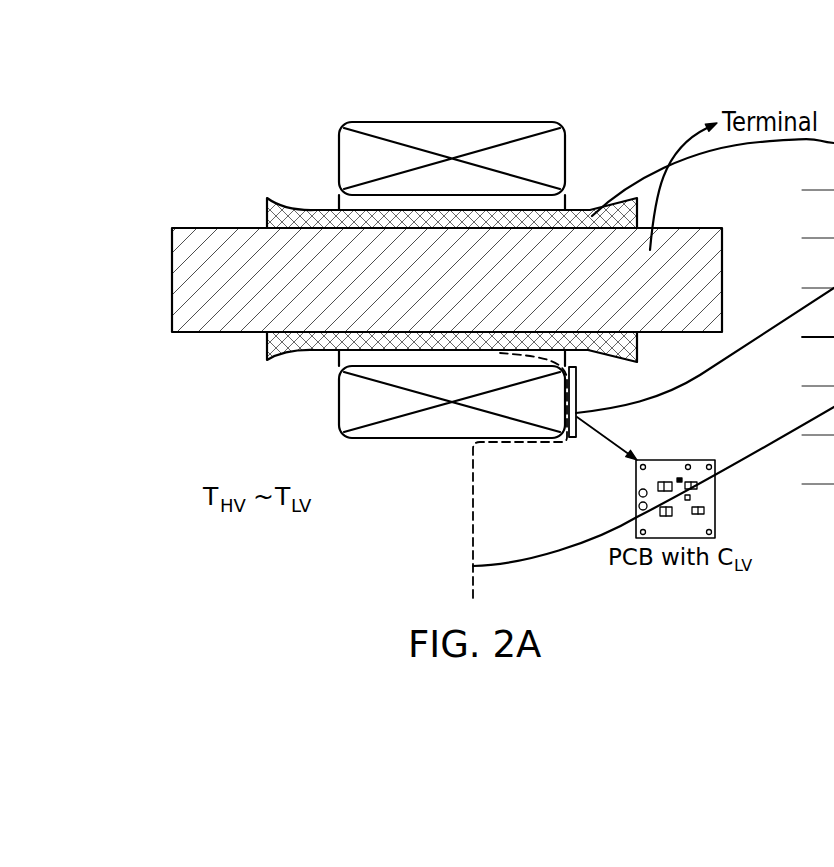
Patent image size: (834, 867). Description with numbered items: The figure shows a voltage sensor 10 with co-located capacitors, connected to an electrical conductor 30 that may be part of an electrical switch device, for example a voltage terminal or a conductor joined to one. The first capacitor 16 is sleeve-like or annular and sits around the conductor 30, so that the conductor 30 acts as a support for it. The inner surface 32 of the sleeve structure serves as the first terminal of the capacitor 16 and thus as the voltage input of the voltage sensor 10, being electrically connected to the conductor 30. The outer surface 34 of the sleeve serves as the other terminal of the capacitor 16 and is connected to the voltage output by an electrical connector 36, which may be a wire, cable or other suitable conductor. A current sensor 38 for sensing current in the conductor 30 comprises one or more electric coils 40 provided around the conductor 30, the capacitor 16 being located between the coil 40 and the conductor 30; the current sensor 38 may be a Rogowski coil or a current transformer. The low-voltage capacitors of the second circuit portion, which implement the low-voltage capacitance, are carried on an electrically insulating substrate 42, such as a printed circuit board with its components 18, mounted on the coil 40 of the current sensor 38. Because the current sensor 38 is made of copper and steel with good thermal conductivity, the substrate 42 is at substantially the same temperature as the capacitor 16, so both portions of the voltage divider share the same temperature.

The voltage sensor 10 is at (420, 251).
The first capacitor 16 is at (412, 281).
The electronic components on PCB 18 is at (662, 482).
The electrical conductor 30 is at (177, 300).
The inner surface 32 is at (283, 231).
The outer surface 34 is at (297, 353).
The electrical connector 36 is at (520, 353).
The current sensor 38 is at (443, 251).
The electric coil 40 is at (439, 128).
The electrically insulating substrate 42 is at (687, 452).